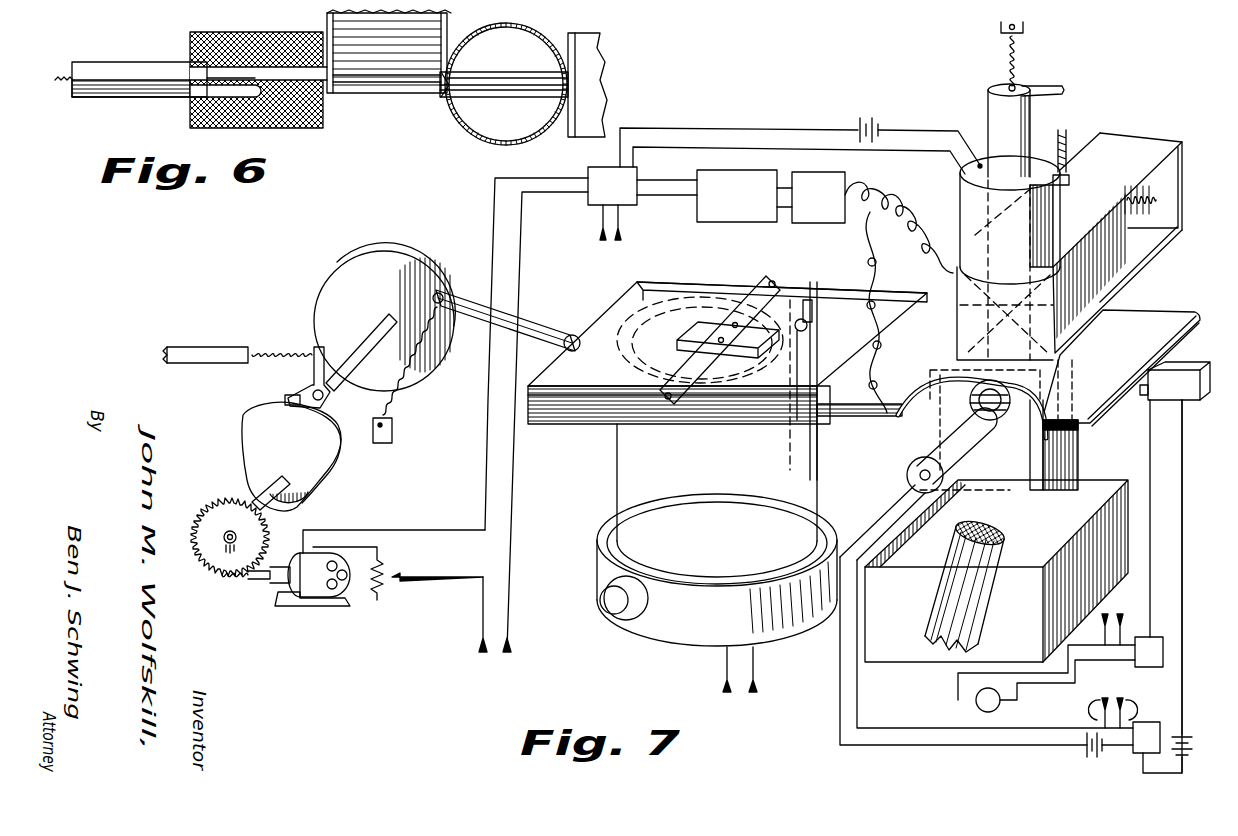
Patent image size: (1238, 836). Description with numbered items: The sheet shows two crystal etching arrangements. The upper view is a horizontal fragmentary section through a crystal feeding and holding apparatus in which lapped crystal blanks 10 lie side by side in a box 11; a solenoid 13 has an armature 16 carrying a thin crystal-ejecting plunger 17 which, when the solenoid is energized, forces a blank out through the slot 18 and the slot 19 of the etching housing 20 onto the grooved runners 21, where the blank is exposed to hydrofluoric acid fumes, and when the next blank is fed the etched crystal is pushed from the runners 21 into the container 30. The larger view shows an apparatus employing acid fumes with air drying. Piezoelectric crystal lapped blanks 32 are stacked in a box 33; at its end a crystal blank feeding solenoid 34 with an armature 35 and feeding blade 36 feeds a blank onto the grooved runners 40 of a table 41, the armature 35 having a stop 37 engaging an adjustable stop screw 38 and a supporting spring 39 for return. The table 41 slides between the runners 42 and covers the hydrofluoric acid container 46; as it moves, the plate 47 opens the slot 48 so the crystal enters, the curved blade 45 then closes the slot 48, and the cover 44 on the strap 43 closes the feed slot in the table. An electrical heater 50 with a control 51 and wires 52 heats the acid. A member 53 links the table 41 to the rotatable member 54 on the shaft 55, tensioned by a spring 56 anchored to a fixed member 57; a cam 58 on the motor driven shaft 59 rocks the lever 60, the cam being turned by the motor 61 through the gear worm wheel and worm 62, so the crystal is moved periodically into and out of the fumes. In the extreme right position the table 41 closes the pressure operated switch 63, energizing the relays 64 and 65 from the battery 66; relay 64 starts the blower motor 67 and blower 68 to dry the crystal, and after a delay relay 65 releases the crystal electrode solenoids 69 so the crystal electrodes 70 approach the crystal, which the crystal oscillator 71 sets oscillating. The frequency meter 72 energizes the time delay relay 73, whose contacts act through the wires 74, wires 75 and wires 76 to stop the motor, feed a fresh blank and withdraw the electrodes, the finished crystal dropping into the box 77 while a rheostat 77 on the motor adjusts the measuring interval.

In FIG. 6, the lapped crystal blanks 10 is at (408, 80).
In FIG. 6, the box 11 is at (378, 90).
In FIG. 6, the solenoid 13 is at (248, 120).
In FIG. 6, the armature 16 is at (144, 97).
In FIG. 6, the crystal-ejecting plunger 17 is at (200, 98).
In FIG. 6, the slot 18 is at (445, 90).
In FIG. 6, the slot 19 is at (465, 95).
In FIG. 6, the etching housing 20 is at (500, 142).
In FIG. 6, the grooved runners 21 is at (496, 73).
In FIG. 6, the container 30 is at (606, 110).
In FIG. 7, the piezoelectric crystal lapped blanks 32 is at (1138, 282).
In FIG. 7, the box 33 is at (1172, 190).
In FIG. 7, the crystal blank feeding solenoid 34 is at (958, 192).
In FIG. 7, the armature 35 is at (1028, 132).
In FIG. 7, the feeding blade 36 is at (1052, 205).
In FIG. 7, the stop 37 is at (1050, 88).
In FIG. 7, the adjustable stop screw 38 is at (1070, 142).
In FIG. 7, the supporting spring 39 is at (1003, 62).
In FIG. 7, the grooved runners 40 is at (935, 375).
In FIG. 7, the table 41 is at (1122, 357).
In FIG. 7, the runners 42 is at (630, 290).
In FIG. 7, the strap 43 is at (785, 288).
In FIG. 7, the cover 44 is at (690, 325).
In FIG. 7, the curved blade 45 is at (1080, 455).
In FIG. 7, the hydrofluoric acid container 46 is at (612, 462).
In FIG. 7, the plate 47 is at (790, 470).
In FIG. 7, the slot 48 is at (820, 458).
In FIG. 7, the electrical heater 50 is at (675, 633).
In FIG. 7, the control 51 is at (610, 610).
In FIG. 7, the wires 52 is at (756, 682).
In FIG. 7, the member 53 is at (528, 328).
In FIG. 7, the rotatable member 54 is at (365, 260).
In FIG. 7, the shaft 55 is at (338, 392).
In FIG. 7, the spring 56 is at (405, 395).
In FIG. 7, the fixed member 57 is at (393, 435).
In FIG. 7, the cam 58 is at (246, 455).
In FIG. 7, the motor driven shaft 59 is at (305, 494).
In FIG. 7, the lever 60 is at (285, 398).
In FIG. 7, the motor 61 is at (292, 585).
In FIG. 7, the gear worm wheel and worm 62 is at (255, 532).
In FIG. 7, the pressure operated switch 63 is at (1188, 366).
In FIG. 7, the relay 64 is at (1138, 662).
In FIG. 7, the relay 65 is at (1135, 748).
In FIG. 7, the battery 66 is at (1185, 738).
In FIG. 7, the blower motor 67 is at (976, 703).
In FIG. 7, the blower 68 is at (930, 622).
In FIG. 7, the crystal electrode solenoids 69 is at (905, 474).
In FIG. 7, the crystal electrodes 70 is at (1015, 362).
In FIG. 7, the crystal oscillator 71 is at (824, 222).
In FIG. 7, the frequency meter 72 is at (714, 218).
In FIG. 7, the relay 73 is at (594, 200).
In FIG. 7, the wires 74 is at (575, 182).
In FIG. 7, the wires 75 is at (635, 158).
In FIG. 7, the wires 76 is at (622, 218).
In FIG. 7, the box 77 is at (382, 584).